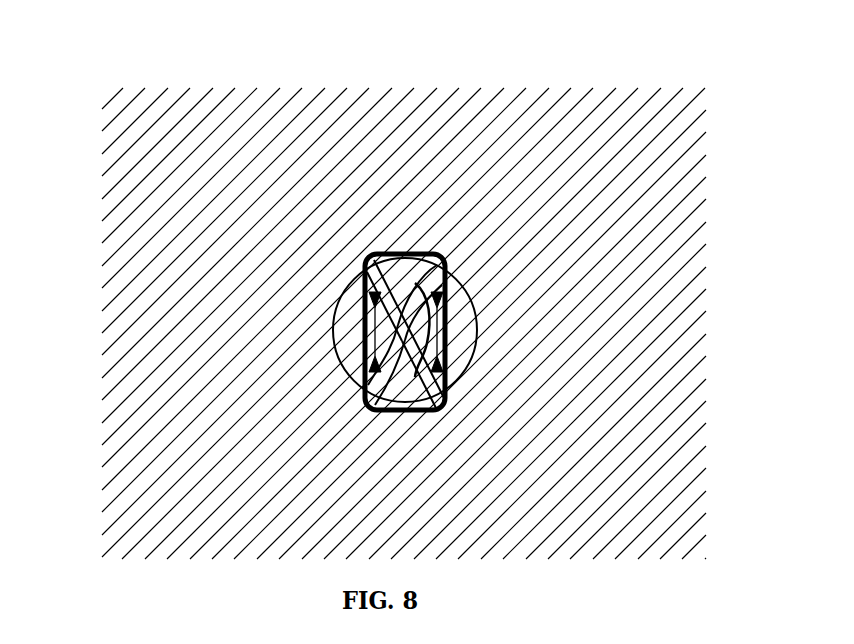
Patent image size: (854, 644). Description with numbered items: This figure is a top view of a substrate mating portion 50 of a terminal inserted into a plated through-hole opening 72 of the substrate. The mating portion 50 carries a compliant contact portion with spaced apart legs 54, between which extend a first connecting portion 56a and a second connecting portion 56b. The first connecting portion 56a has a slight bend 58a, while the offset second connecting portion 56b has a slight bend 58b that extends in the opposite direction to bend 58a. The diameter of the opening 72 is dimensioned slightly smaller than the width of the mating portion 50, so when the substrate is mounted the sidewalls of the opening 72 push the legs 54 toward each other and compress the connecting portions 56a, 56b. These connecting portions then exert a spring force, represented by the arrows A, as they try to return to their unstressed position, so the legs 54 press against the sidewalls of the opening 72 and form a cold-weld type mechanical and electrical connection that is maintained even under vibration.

The substrate mating portion 50 is at (402, 253).
The spaced apart legs 54 is at (415, 253).
The first connecting portion 56a is at (375, 380).
The second connecting portion 56b is at (445, 270).
The bend of first connecting portion 58a is at (370, 332).
The bend of second connecting portion 58b is at (477, 337).
The plated through hole opening 72 is at (428, 345).
The arrows representing spring force A is at (372, 300).